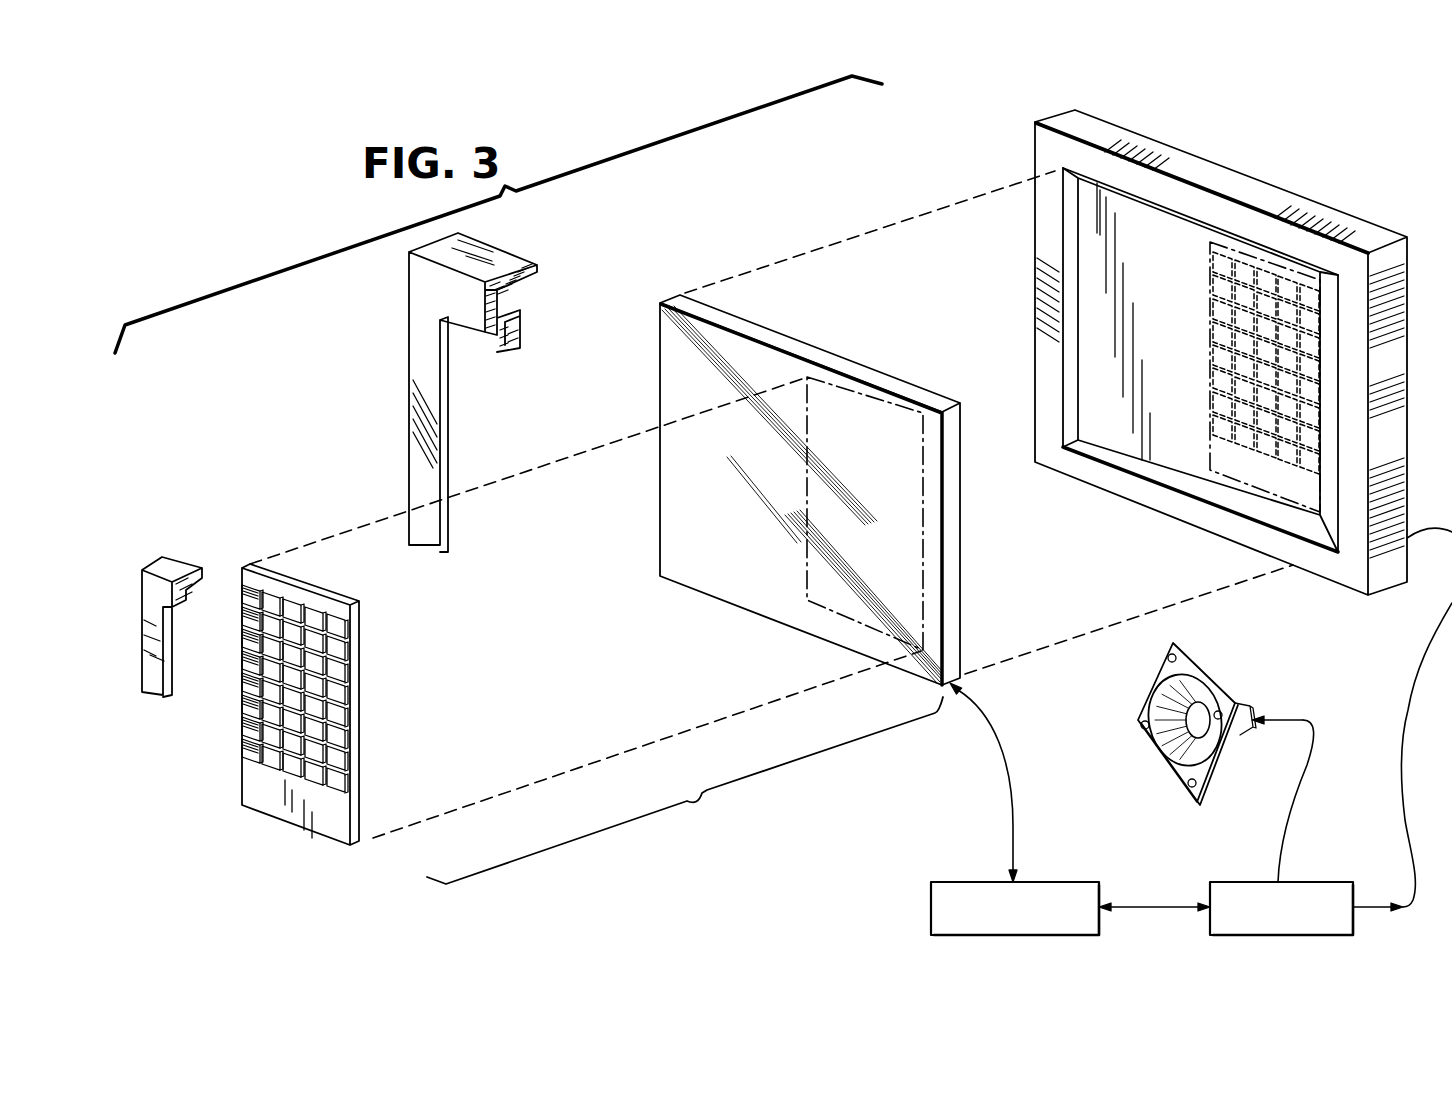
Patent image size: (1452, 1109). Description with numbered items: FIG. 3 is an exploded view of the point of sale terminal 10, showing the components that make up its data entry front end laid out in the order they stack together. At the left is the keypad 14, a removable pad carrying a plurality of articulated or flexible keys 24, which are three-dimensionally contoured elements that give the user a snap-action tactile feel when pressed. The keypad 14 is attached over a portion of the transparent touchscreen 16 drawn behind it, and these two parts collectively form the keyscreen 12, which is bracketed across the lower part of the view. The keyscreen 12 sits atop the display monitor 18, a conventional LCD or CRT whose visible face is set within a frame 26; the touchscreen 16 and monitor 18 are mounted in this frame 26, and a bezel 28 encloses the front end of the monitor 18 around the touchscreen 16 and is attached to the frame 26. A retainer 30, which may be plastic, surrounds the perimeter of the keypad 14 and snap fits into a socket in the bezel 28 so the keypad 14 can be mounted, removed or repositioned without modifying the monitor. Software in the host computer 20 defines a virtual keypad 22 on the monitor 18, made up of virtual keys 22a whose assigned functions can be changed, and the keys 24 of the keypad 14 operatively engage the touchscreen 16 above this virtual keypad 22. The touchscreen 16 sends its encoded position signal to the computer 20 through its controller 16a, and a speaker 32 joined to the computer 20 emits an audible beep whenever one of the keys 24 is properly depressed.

The computer-based terminal 10 is at (1322, 663).
The keyscreen 12 is at (685, 790).
The keypad 14 is at (311, 712).
The touchscreen 16 is at (682, 538).
The controller 16a is at (931, 883).
The display monitor 18 is at (1096, 376).
The host computer 20 is at (1210, 883).
The virtual keypad 22 is at (1244, 250).
The virtual key 22a is at (1264, 434).
The keys 24 is at (350, 683).
The frame 26 is at (1183, 352).
The bezel 28 is at (425, 337).
The retainer 30 is at (173, 563).
The speaker 32 is at (1152, 757).